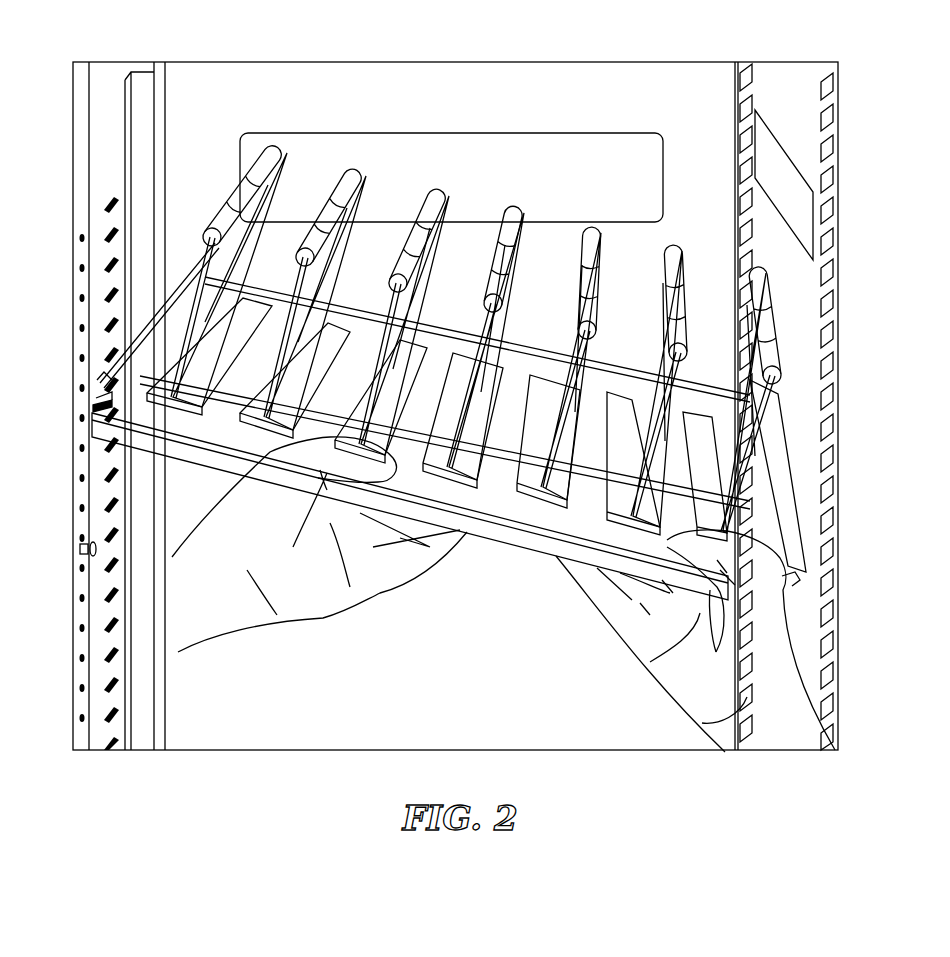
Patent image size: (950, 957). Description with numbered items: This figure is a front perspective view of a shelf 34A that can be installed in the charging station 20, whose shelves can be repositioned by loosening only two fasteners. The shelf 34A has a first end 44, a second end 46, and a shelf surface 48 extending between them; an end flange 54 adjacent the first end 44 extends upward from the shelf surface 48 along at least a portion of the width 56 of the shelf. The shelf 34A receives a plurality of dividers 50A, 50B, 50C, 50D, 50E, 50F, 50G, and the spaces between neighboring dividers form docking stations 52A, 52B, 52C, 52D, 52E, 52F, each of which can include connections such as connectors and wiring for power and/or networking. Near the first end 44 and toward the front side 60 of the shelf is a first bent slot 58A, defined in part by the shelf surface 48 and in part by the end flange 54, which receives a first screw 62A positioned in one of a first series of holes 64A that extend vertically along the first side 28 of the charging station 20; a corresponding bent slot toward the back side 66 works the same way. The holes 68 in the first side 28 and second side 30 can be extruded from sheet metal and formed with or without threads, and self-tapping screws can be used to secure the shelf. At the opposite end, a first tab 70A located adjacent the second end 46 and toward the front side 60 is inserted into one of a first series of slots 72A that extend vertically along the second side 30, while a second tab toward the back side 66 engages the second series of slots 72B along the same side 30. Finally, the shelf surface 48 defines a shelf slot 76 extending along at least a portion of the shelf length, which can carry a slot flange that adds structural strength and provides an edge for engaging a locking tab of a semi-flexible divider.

The charging station 20 is at (252, 66).
The first side 28 is at (95, 268).
The second side 30 is at (765, 225).
The shelf 34A is at (561, 540).
The first end 44 is at (103, 394).
The second end 46 is at (765, 515).
The shelf surface 48 is at (542, 513).
The divider 50A is at (248, 222).
The divider 50B is at (338, 250).
The divider 50C is at (418, 262).
The divider 50D is at (493, 325).
The divider 50E is at (580, 320).
The divider 50F is at (655, 332).
The divider 50G is at (726, 350).
The docking station 52A is at (312, 180).
The docking station 52B is at (399, 190).
The docking station 52C is at (477, 202).
The docking station 52D is at (558, 224).
The docking station 52E is at (635, 237).
The docking station 52F is at (708, 259).
The end flange 54 is at (100, 372).
The width 56 is at (624, 398).
The first bent slot 58A is at (97, 410).
The front side 60 is at (491, 521).
The first screw 62A is at (80, 549).
The first series of holes 64A is at (82, 597).
The back side 66 is at (458, 338).
The holes 68 is at (80, 703).
The first tab 70A is at (800, 578).
The first series of slots 72A is at (835, 305).
The second series of slots 72B is at (740, 89).
The shelf slot 76 is at (232, 398).